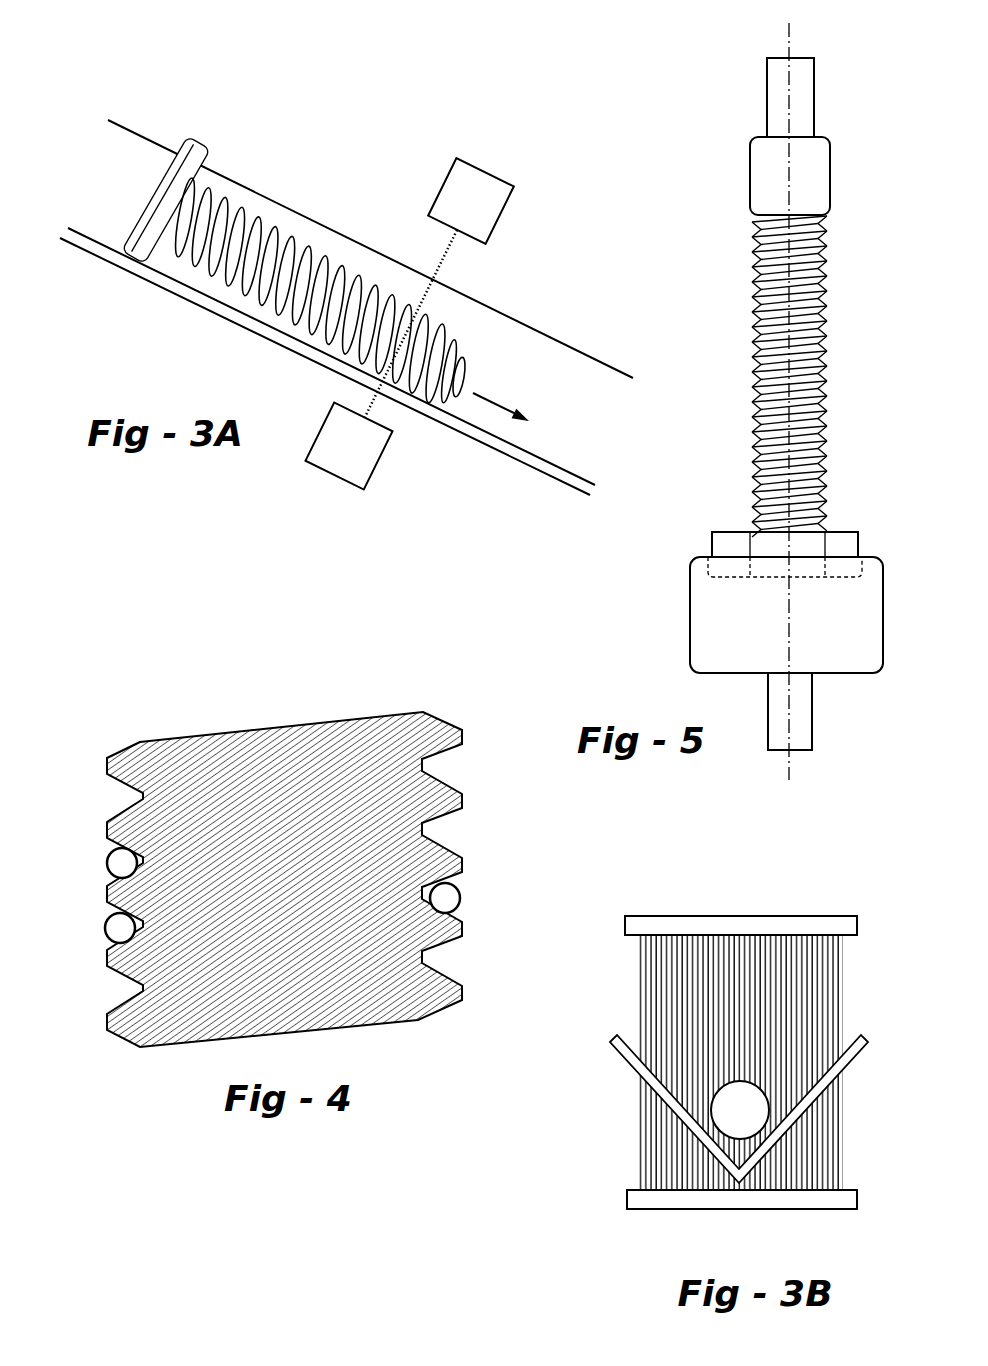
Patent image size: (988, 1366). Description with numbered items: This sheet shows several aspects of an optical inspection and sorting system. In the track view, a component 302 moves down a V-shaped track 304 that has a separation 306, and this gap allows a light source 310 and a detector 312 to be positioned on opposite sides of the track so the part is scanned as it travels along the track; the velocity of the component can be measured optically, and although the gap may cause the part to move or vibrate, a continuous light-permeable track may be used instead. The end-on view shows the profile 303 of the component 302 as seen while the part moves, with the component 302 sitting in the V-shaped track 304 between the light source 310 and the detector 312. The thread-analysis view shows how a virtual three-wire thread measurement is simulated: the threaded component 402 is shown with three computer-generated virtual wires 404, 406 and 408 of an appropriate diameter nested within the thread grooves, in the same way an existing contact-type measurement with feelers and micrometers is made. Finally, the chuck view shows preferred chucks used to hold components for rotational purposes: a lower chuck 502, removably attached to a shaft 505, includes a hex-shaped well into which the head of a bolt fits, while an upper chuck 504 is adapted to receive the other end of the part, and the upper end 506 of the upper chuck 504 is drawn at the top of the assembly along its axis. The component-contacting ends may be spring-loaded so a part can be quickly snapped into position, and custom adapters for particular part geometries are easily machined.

In FIG. 3A, the component 302 is at (197, 142).
In FIG. 3B, the profile 303 is at (748, 1094).
In FIG. 3A, the V-shaped track 304 is at (300, 210).
In FIG. 3B, the V-shaped track 304 is at (863, 1042).
In FIG. 3A, the separation 306 is at (437, 283).
In FIG. 3A, the light source 310 is at (481, 189).
In FIG. 3B, the light source 310 is at (763, 925).
In FIG. 3A, the detector 312 is at (369, 449).
In FIG. 3B, the detector 312 is at (660, 1202).
In FIG. 4, the component 402 is at (230, 730).
In FIG. 4, the virtual wire 404 is at (107, 860).
In FIG. 4, the virtual wire 406 is at (105, 925).
In FIG. 4, the virtual wire 408 is at (447, 900).
In FIG. 5, the lower chuck 502 is at (717, 637).
In FIG. 5, the upper chuck 504 is at (777, 100).
In FIG. 5, the shaft 505 is at (803, 715).
In FIG. 5, the shaft tip 506 is at (775, 55).